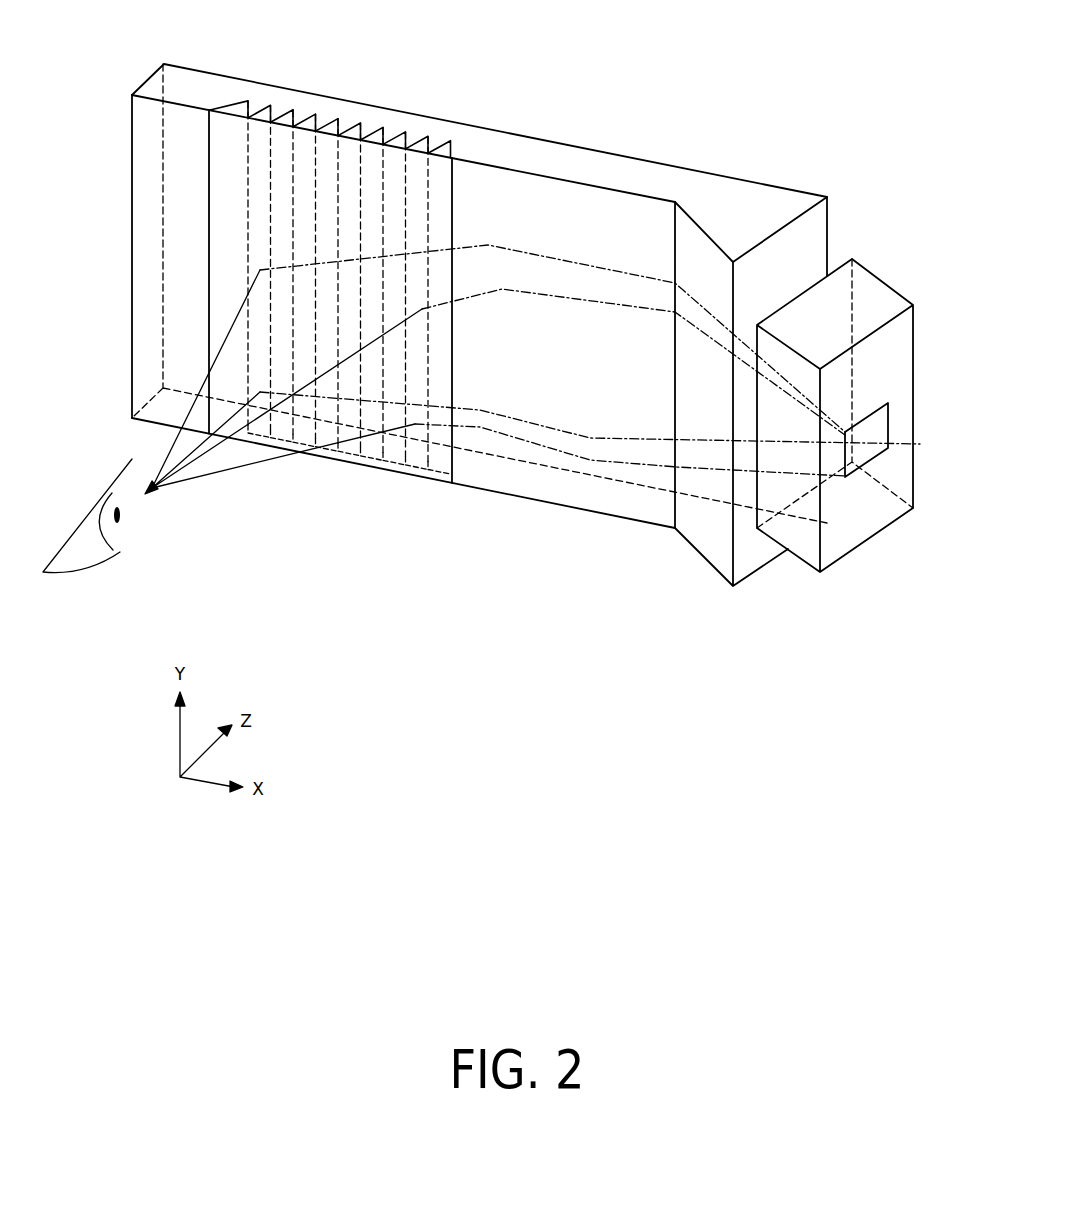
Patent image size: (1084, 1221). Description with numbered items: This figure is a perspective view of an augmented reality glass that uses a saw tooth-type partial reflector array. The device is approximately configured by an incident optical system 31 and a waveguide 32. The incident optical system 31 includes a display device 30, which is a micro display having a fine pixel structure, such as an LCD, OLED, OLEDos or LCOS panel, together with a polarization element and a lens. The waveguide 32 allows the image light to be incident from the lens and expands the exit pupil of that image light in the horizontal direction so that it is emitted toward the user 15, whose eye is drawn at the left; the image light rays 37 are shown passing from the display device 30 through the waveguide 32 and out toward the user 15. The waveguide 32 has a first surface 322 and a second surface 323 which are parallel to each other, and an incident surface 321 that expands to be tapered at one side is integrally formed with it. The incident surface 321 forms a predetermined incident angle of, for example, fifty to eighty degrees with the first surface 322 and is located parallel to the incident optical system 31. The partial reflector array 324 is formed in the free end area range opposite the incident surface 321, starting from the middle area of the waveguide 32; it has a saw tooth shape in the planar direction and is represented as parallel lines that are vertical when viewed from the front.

The user 15 is at (85, 553).
The display device 30 is at (878, 420).
The incident optical system 31 is at (882, 282).
The waveguide 32 is at (620, 170).
The image light rays 37 is at (222, 467).
The incident surface 321 is at (810, 238).
The first surface 322 is at (260, 84).
The second surface 323 is at (547, 507).
The partial reflector array 324 is at (432, 130).